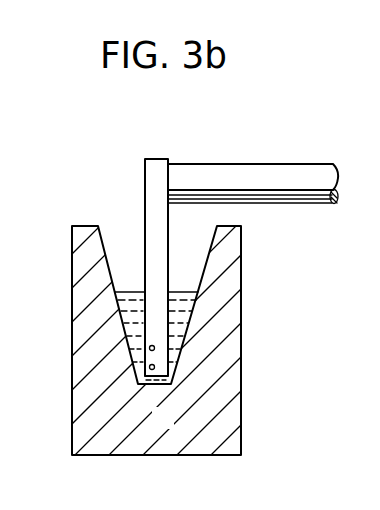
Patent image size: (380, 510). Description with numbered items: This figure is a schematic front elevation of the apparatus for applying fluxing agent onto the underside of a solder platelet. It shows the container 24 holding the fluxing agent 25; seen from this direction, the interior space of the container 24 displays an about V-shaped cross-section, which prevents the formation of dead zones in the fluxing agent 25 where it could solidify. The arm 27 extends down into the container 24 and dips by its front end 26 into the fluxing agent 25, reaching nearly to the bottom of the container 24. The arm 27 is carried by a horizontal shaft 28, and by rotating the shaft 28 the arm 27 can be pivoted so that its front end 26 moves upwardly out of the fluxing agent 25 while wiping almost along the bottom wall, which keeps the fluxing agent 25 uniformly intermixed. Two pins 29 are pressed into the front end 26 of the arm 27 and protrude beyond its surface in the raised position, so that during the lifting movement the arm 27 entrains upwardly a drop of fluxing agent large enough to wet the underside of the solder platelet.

The container 24 is at (173, 431).
The fluxing agent 25 is at (178, 322).
The front end 26 is at (160, 362).
The arm 27 is at (152, 249).
The horizontal shaft 28 is at (271, 176).
The pins 29 is at (148, 366).